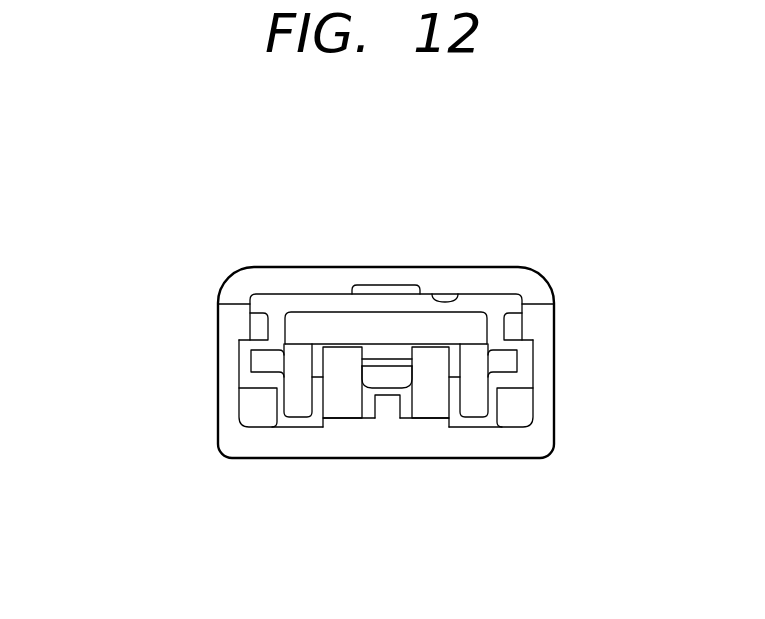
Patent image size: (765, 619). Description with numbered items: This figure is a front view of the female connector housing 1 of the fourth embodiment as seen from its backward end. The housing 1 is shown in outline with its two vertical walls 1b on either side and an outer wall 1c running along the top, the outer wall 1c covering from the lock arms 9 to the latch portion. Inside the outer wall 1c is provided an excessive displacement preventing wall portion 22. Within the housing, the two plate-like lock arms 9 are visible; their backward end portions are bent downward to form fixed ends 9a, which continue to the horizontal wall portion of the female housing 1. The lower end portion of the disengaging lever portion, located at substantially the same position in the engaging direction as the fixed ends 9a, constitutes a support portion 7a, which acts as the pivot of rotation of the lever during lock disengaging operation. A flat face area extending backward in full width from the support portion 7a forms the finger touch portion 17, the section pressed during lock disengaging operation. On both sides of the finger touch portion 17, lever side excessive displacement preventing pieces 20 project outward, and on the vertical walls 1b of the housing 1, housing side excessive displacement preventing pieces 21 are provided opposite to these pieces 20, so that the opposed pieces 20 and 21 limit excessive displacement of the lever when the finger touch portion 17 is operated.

The female connector housing 1 is at (209, 259).
The vertical wall 1b is at (226, 398).
The outer wall 1c is at (343, 283).
The finger touch portion 17 is at (377, 322).
The excessive displacement preventing wall portion 22 is at (461, 298).
The housing side excessive displacement preventing piece 21 is at (258, 325).
The lever side excessive displacement preventing piece 20 is at (259, 358).
The support portion 7a is at (297, 418).
The lock arm 9 is at (338, 360).
The fixed end 9a is at (347, 418).